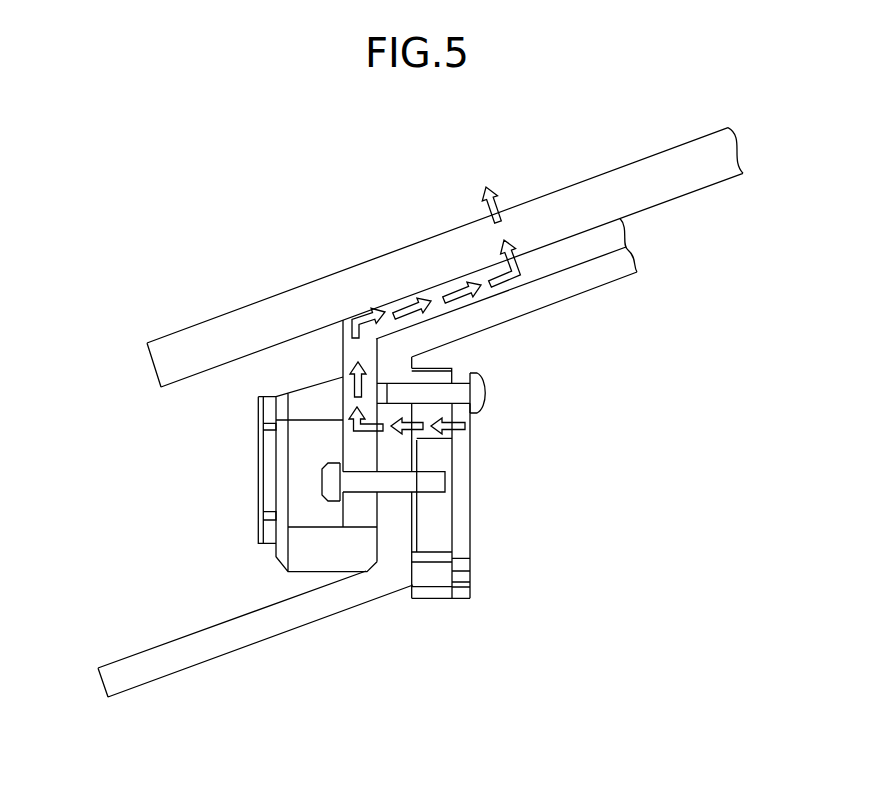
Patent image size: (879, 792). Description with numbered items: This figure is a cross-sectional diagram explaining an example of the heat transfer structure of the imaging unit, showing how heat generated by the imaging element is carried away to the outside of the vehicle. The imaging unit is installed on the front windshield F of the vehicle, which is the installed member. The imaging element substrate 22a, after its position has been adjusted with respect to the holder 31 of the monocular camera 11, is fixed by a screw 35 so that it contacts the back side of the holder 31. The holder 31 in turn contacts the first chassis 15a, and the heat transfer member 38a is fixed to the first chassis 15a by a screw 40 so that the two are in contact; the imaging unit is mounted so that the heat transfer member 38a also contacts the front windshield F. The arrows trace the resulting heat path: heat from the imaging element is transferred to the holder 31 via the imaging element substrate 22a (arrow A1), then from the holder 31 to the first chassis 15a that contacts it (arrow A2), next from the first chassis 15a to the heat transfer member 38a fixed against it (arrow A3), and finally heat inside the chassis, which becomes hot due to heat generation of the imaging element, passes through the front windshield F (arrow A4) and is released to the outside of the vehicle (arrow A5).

The front windshield F is at (421, 252).
The monocular camera 11 is at (270, 472).
The first chassis 15a is at (501, 322).
The imaging element substrate 22a is at (465, 512).
The holder 31 is at (436, 362).
The screw 35 is at (487, 397).
The heat transfer member 38a is at (615, 236).
The screw 40 is at (323, 482).
The arrow A1 is at (468, 430).
The arrow A2 is at (403, 439).
The arrow A3 is at (365, 384).
The arrow A4 is at (469, 271).
The arrow A5 is at (506, 201).